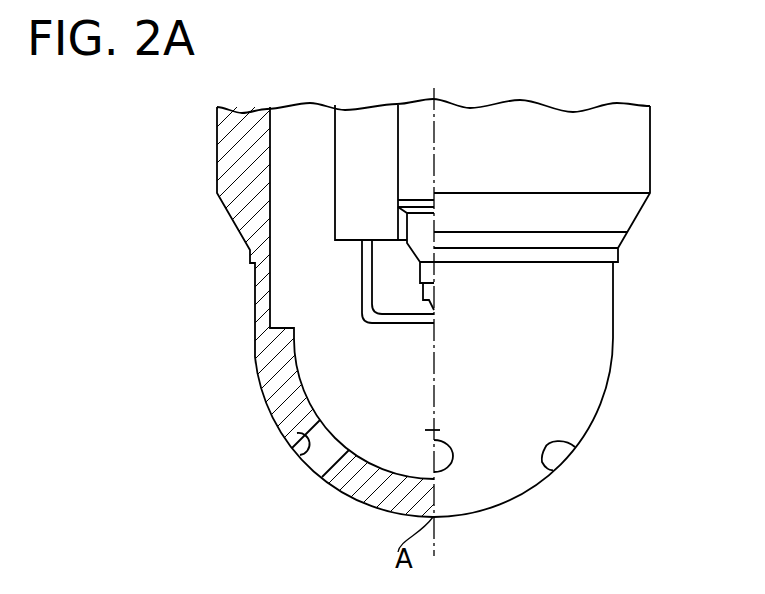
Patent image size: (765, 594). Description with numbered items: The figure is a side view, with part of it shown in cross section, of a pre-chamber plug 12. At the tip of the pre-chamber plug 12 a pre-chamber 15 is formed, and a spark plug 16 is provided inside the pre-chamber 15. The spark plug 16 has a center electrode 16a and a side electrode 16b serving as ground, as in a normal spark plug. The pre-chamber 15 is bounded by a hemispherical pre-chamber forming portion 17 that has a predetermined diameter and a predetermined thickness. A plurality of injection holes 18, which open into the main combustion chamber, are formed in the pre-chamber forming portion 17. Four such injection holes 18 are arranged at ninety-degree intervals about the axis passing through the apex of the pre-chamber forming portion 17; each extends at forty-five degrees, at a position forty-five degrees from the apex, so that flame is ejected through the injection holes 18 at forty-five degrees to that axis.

The pre-chamber plug 12 is at (656, 81).
The pre-chamber 15 is at (310, 367).
The spark plug 16 is at (417, 94).
The center electrode 16a is at (435, 310).
The side electrode 16b is at (398, 324).
The pre-chamber forming portion 17 is at (348, 493).
The injection holes 18 is at (302, 453).